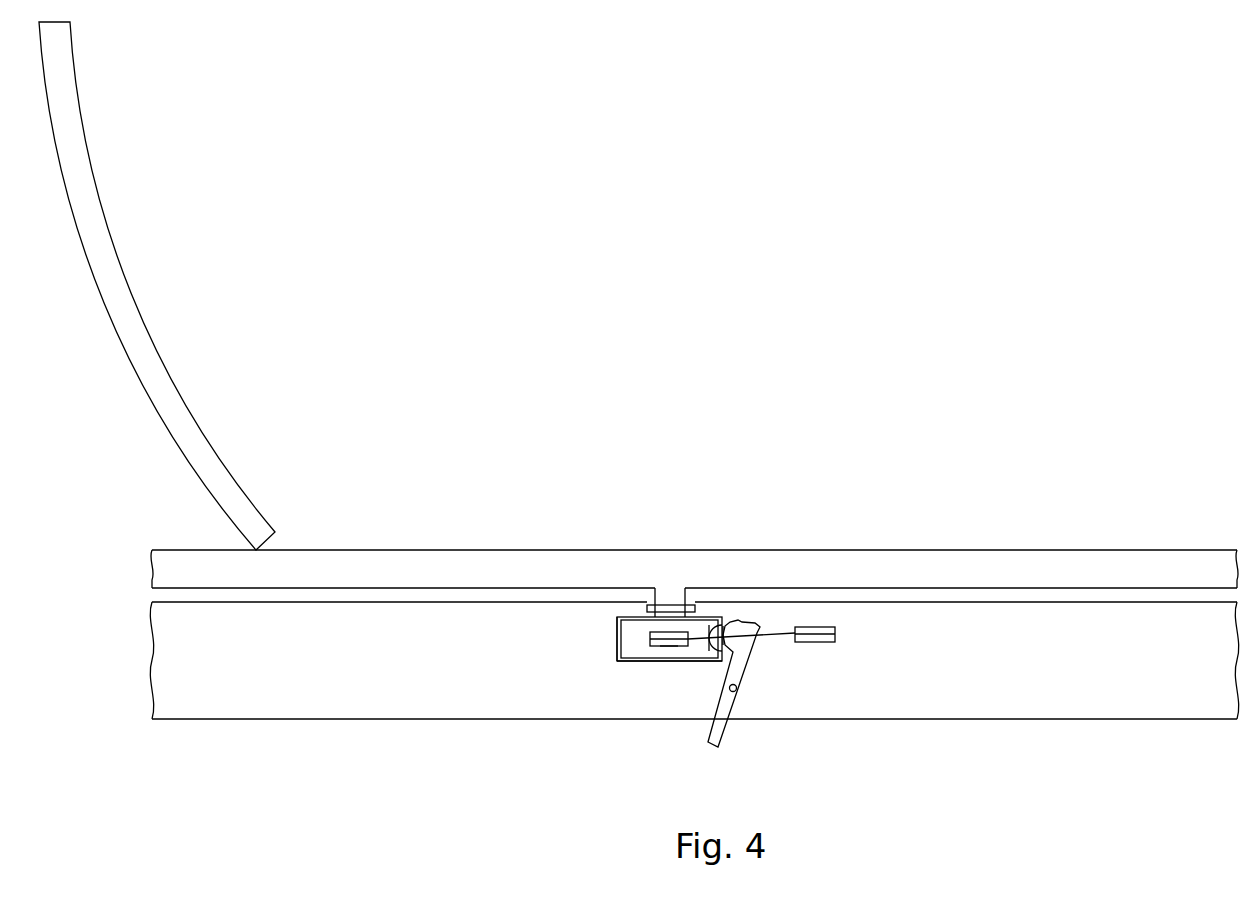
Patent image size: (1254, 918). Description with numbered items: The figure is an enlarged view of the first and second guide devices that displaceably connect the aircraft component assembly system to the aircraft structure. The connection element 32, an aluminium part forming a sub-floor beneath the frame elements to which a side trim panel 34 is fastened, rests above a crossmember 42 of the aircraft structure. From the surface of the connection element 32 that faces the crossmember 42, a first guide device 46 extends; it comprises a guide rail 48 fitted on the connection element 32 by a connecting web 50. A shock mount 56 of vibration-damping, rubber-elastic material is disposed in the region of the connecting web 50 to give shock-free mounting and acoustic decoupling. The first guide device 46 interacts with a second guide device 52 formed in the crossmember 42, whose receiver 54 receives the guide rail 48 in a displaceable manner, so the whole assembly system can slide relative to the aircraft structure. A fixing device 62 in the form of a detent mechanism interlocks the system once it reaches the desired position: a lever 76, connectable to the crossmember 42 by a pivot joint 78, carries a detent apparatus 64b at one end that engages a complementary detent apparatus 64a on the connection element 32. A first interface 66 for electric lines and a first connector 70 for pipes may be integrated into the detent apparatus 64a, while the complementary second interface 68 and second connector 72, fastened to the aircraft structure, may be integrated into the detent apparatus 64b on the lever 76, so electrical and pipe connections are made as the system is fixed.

The connection element 32 is at (1050, 558).
The side trim panel 34 is at (118, 273).
The crossmember 42 is at (205, 705).
The first guide device 46 is at (756, 599).
The guide rail 48 is at (631, 649).
The connecting web 50 is at (662, 595).
The second guide device 52 is at (637, 676).
The receiver 54 is at (617, 635).
The shock mount 56 is at (672, 605).
The fixing device 62 is at (704, 648).
The complementary detent apparatus 64a is at (707, 617).
The detent apparatus 64b is at (727, 618).
The first interface 66 is at (667, 646).
The second interface 68 is at (837, 637).
The first connector 70 is at (648, 635).
The second connector 72 is at (835, 630).
The lever 76 is at (727, 732).
The pivot joint 78 is at (740, 688).